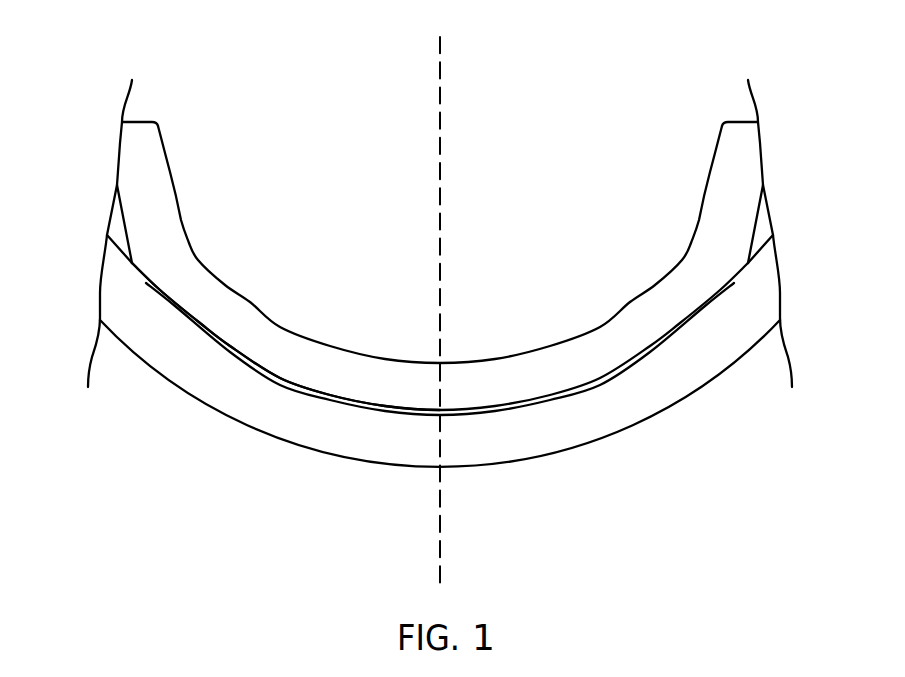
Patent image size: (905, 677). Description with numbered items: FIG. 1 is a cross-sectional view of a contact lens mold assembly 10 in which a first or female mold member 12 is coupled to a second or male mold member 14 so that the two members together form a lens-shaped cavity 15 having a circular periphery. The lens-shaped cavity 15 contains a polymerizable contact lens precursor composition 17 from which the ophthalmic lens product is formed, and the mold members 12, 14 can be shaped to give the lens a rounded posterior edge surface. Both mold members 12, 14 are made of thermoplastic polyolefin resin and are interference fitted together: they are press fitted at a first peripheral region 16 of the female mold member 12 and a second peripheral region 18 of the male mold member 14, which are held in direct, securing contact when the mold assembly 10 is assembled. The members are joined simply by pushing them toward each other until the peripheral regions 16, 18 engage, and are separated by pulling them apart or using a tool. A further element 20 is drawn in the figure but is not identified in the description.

The chin rest assembly 10 is at (548, 110).
The lower surface of chin rest 12 is at (598, 427).
The upper surface of chin rest 14 is at (537, 363).
The lip 15 is at (660, 347).
The side wall 16 is at (132, 263).
The lip 17 is at (210, 334).
The flange 18 is at (132, 263).
The lip lower edge 20 is at (308, 397).